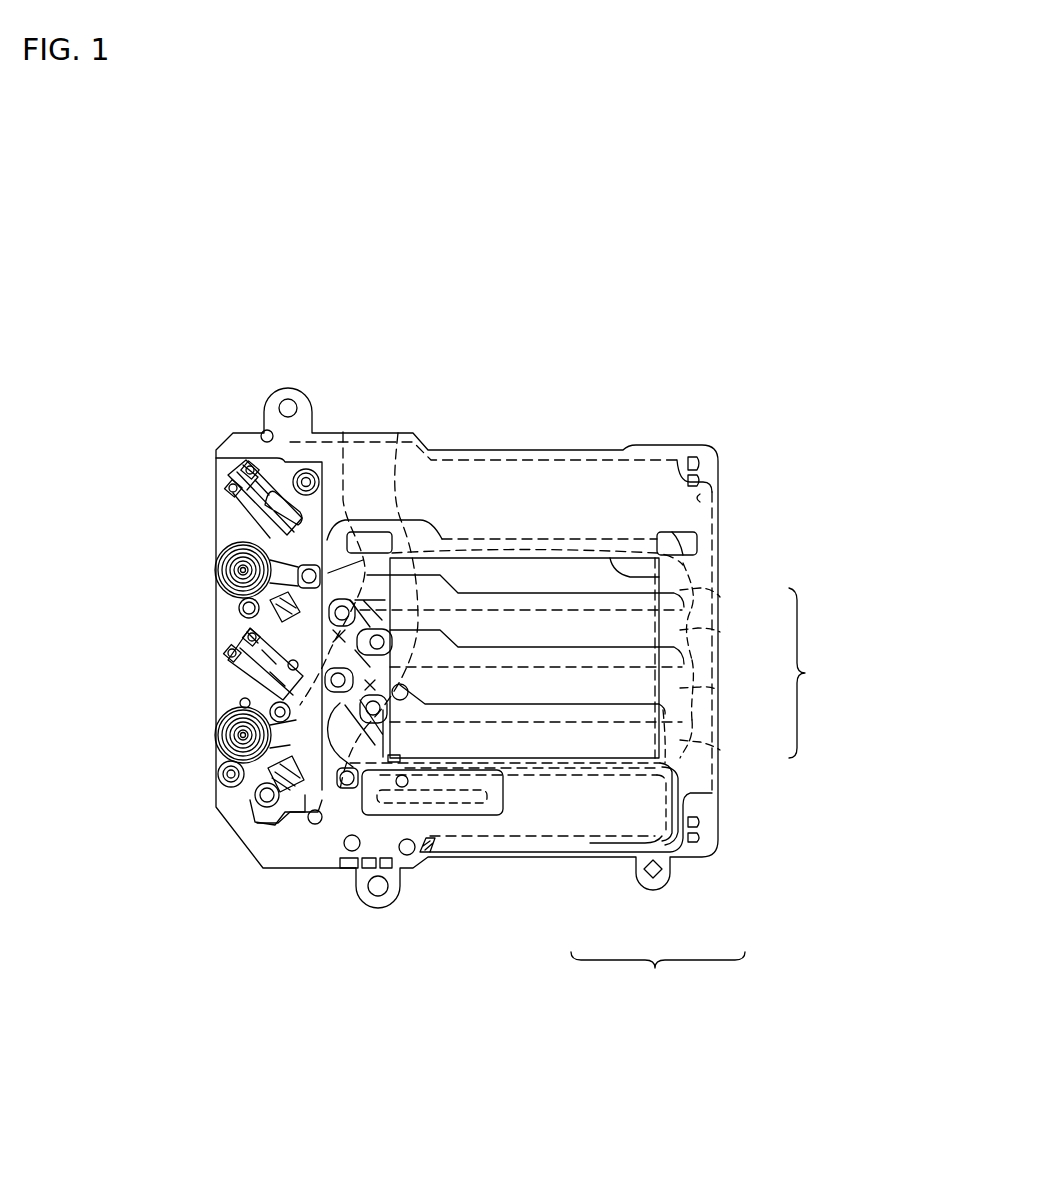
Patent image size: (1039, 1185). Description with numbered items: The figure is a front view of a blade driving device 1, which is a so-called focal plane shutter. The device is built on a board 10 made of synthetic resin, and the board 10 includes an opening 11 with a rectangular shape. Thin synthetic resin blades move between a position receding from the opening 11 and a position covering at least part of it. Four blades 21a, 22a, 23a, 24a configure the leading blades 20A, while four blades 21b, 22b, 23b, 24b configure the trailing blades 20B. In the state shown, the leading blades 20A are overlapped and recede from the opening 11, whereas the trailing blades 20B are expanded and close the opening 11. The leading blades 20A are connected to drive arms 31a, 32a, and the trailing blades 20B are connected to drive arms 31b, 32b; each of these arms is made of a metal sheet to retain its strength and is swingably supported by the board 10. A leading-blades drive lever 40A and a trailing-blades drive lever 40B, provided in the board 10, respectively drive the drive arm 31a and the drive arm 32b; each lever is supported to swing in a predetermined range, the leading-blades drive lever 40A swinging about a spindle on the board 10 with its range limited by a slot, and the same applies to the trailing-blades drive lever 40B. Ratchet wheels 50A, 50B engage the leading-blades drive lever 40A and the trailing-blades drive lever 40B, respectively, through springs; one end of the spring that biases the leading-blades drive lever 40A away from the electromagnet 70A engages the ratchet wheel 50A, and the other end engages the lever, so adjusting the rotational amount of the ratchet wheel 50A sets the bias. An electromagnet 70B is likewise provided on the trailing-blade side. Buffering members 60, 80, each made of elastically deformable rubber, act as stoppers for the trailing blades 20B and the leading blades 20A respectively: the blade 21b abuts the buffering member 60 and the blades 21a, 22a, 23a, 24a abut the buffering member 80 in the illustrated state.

The blade driving device 1 is at (693, 381).
The board 10 is at (731, 851).
The opening 11 is at (683, 577).
The leading blades 20A is at (658, 972).
The trailing blades 20B is at (816, 673).
The blade 21a is at (582, 828).
The blade 22a is at (523, 860).
The blade 23a is at (682, 854).
The blade 24a is at (702, 856).
The blade 21b is at (720, 750).
The blade 22b is at (717, 690).
The blade 23b is at (720, 632).
The blade 24b is at (720, 597).
The drive arm 31a is at (340, 820).
The drive arm 31b is at (398, 445).
The drive arm 32a is at (365, 700).
The drive arm 32b is at (343, 430).
The leading-blades drive lever 40A is at (262, 790).
The trailing-blades drive lever 40B is at (215, 611).
The ratchet wheel 50A is at (201, 738).
The ratchet wheel 50B is at (201, 570).
The buffering member 60 is at (485, 819).
The electromagnet 70A is at (212, 657).
The electromagnet 70B is at (227, 503).
The buffering member 80 is at (345, 870).